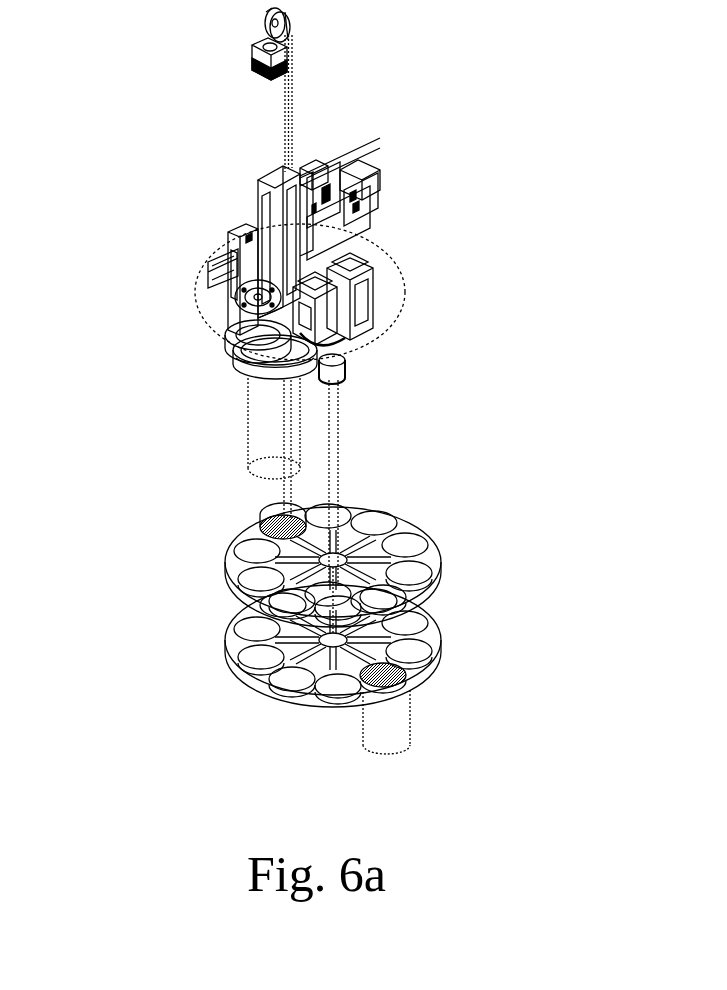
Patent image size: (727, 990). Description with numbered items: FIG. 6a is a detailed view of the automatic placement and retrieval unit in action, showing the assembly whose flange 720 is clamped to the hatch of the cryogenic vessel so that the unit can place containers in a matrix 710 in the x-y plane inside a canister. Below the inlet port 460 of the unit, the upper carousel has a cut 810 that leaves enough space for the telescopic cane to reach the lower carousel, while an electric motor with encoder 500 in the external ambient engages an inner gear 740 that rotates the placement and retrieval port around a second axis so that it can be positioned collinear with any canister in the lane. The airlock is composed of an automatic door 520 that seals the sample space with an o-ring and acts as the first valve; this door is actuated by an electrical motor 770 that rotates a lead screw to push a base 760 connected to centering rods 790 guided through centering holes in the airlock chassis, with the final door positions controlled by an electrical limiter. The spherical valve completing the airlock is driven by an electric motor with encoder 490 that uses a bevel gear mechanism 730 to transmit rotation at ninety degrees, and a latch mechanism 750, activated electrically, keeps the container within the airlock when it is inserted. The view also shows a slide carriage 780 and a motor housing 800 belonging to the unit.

The inlet port 460 is at (290, 405).
The electric motor with encoder 490 is at (200, 283).
The electric motor with encoder 500 is at (233, 230).
The automatic door 520 is at (247, 207).
The matrix 710 is at (257, 530).
The flange 720 is at (233, 377).
The bevel gear mechanism 730 is at (227, 337).
The inner gear 740 is at (227, 318).
The latch mechanism 750 is at (223, 263).
The base 760 is at (300, 158).
The electrical motor 770 is at (368, 175).
The slide carriage 780 is at (330, 178).
The centering rods 790 is at (292, 255).
The motor housing 800 is at (290, 258).
The cut 810 is at (417, 600).